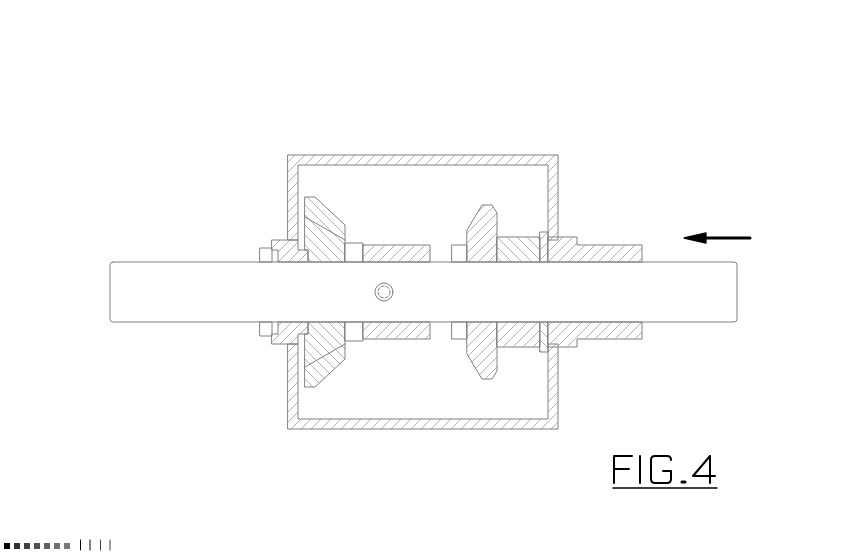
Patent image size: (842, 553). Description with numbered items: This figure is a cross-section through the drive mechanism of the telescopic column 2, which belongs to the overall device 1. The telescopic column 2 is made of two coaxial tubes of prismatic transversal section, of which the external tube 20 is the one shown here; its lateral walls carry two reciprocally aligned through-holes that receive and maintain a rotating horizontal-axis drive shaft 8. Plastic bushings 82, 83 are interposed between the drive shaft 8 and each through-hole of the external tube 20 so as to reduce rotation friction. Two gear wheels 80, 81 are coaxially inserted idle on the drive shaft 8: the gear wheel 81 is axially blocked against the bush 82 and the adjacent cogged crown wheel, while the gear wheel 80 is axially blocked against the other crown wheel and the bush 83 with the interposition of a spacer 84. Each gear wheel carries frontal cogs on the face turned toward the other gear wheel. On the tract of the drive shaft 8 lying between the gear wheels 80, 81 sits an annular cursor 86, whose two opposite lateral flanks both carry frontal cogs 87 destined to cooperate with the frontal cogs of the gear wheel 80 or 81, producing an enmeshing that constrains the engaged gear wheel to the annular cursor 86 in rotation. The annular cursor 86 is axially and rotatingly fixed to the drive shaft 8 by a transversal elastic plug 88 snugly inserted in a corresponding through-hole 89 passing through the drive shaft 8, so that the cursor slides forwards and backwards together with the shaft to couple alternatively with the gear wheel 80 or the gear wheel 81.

The drive assembly 1 is at (389, 276).
The telescopic column 2 is at (495, 229).
The drive shaft 8 is at (130, 293).
The external tube 20 is at (435, 160).
The gear wheel 80 is at (484, 222).
The gear wheel 81 is at (322, 215).
The plastic bushing 82 is at (293, 337).
The plastic bushing 83 is at (620, 337).
The spacer 84 is at (515, 345).
The annular cursor 86 is at (387, 333).
The frontal cogs 87 is at (353, 333).
The transversal elastic plug 88 is at (376, 285).
The through-hole 89 is at (400, 286).